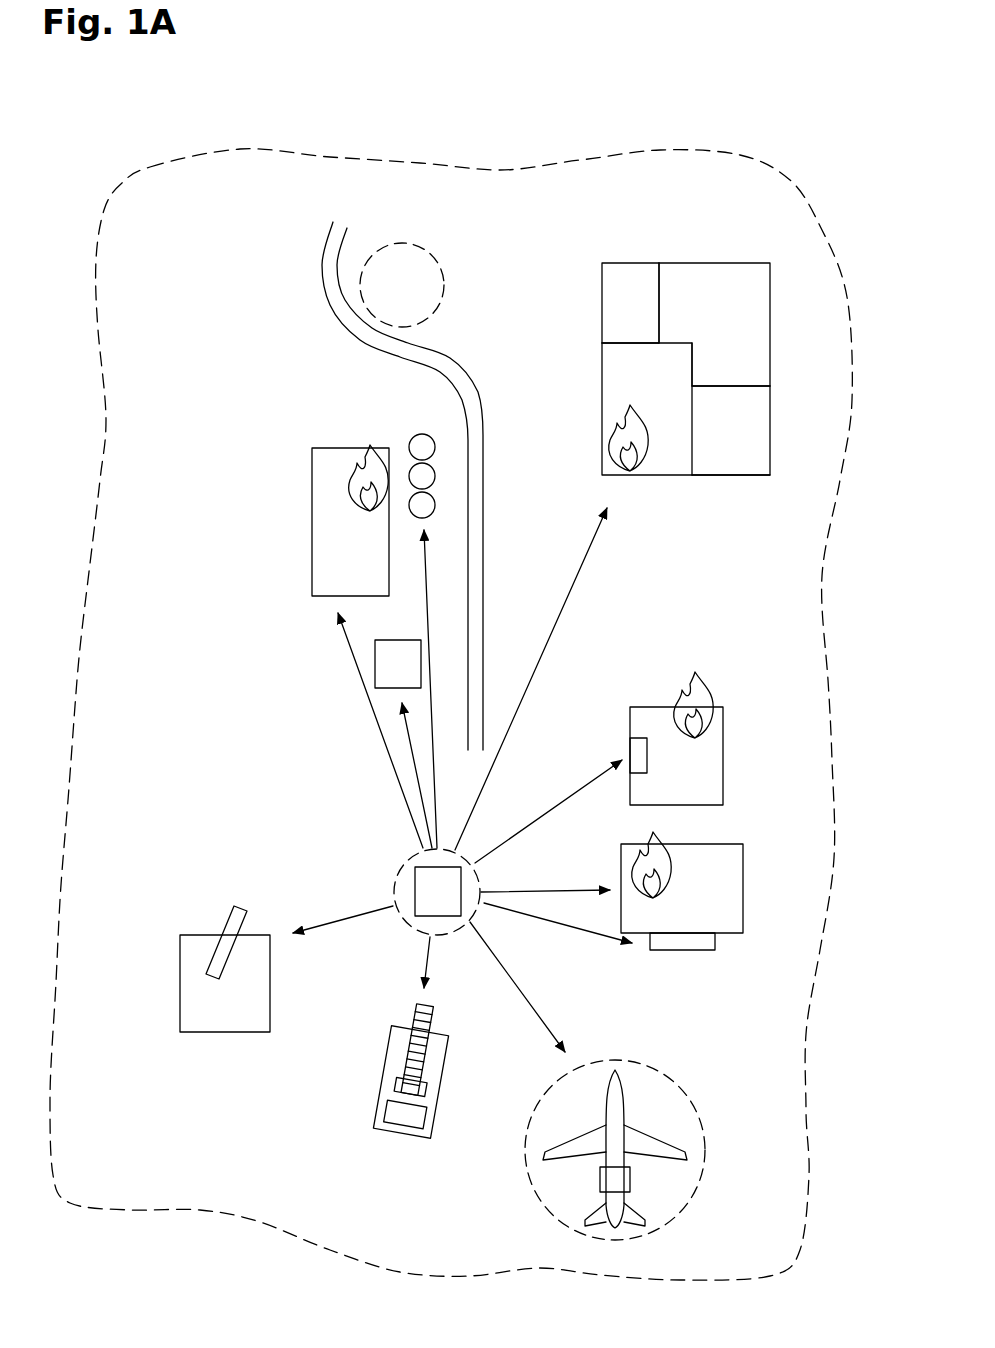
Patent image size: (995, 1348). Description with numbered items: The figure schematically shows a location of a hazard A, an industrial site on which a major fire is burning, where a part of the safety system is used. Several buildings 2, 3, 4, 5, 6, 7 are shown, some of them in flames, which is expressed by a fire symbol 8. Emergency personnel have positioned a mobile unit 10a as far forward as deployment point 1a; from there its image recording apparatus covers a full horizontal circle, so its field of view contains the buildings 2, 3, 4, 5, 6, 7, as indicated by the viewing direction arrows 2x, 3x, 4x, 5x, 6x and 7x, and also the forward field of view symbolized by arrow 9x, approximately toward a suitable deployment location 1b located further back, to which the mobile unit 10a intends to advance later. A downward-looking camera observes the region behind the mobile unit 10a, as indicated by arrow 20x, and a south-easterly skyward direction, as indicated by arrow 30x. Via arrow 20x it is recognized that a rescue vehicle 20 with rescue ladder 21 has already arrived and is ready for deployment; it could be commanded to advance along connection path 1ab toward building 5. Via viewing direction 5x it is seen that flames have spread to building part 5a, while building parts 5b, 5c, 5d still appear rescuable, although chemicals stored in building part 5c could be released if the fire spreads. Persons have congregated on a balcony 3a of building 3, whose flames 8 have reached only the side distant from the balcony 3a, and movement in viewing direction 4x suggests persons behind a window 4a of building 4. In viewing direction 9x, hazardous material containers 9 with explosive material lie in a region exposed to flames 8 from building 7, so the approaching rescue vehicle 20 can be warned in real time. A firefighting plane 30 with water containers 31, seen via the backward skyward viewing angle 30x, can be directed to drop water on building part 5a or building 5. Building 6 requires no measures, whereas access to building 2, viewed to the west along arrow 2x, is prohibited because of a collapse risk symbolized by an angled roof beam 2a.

The location of the hazard A is at (202, 1198).
The deployment point 1a is at (470, 908).
The connection path 1ab is at (336, 313).
The deployment location 1b is at (446, 283).
The building 2 is at (212, 983).
The angled roof beam 2a is at (222, 918).
The viewing direction arrow 2x is at (333, 921).
The building 3 is at (713, 937).
The balcony 3a is at (705, 951).
The viewing direction arrow 3x is at (592, 933).
The building 4 is at (671, 756).
The window 4a is at (633, 745).
The viewing direction arrow 4x is at (557, 805).
The building 5 is at (682, 384).
The building part 5a is at (606, 379).
The building part 5b is at (630, 282).
The building part 5c is at (716, 282).
The building part 5d is at (752, 437).
The viewing direction arrow 5x is at (560, 620).
The building 6 is at (378, 668).
The viewing direction arrow 6x is at (407, 756).
The building 7 is at (326, 560).
The viewing direction arrow 7x is at (404, 803).
The fire symbol 8 is at (375, 452).
The hazardous material containers 9 is at (421, 446).
The arrow 9x is at (430, 570).
The mobile unit 10a is at (443, 918).
The rescue vehicle 20 is at (380, 1058).
The viewing direction arrow 20x is at (427, 962).
The rescue ladder 21 is at (413, 1012).
The firefighting plane 30 is at (637, 1150).
The viewing angle arrow 30x is at (545, 1028).
The water containers 31 is at (630, 1178).